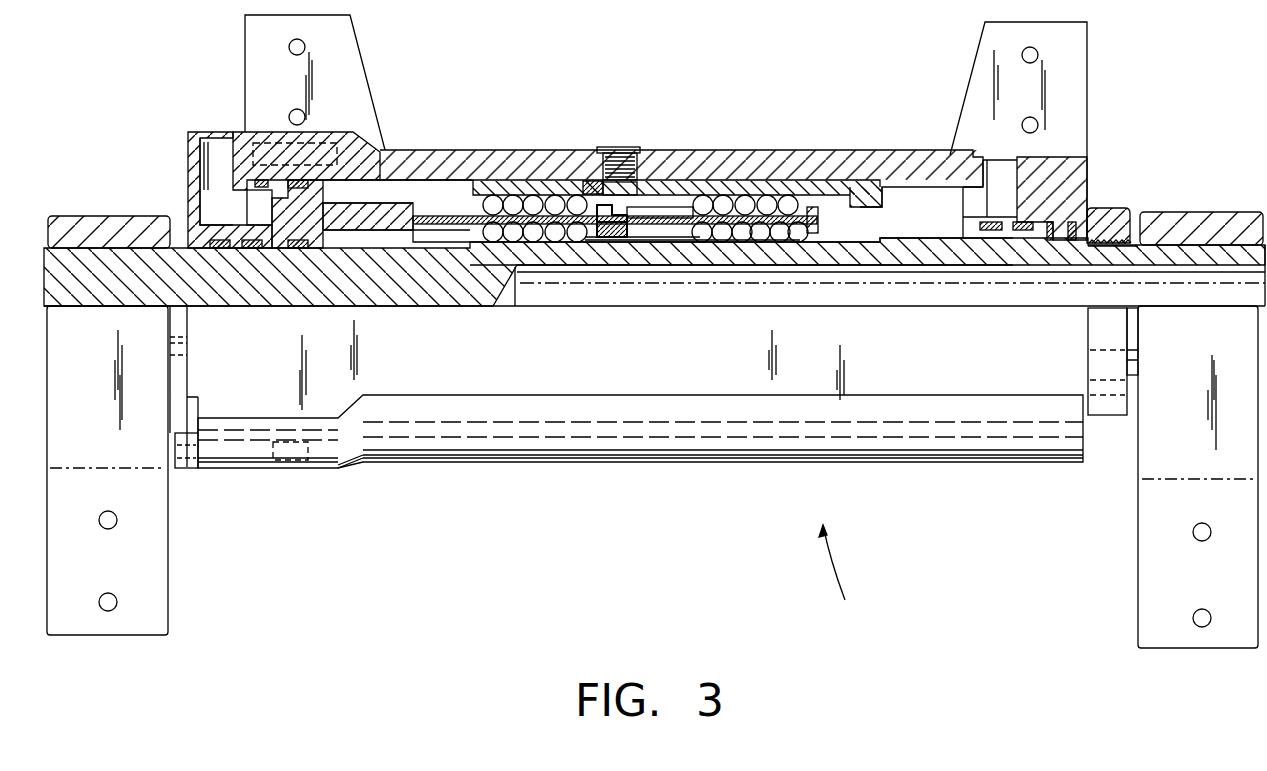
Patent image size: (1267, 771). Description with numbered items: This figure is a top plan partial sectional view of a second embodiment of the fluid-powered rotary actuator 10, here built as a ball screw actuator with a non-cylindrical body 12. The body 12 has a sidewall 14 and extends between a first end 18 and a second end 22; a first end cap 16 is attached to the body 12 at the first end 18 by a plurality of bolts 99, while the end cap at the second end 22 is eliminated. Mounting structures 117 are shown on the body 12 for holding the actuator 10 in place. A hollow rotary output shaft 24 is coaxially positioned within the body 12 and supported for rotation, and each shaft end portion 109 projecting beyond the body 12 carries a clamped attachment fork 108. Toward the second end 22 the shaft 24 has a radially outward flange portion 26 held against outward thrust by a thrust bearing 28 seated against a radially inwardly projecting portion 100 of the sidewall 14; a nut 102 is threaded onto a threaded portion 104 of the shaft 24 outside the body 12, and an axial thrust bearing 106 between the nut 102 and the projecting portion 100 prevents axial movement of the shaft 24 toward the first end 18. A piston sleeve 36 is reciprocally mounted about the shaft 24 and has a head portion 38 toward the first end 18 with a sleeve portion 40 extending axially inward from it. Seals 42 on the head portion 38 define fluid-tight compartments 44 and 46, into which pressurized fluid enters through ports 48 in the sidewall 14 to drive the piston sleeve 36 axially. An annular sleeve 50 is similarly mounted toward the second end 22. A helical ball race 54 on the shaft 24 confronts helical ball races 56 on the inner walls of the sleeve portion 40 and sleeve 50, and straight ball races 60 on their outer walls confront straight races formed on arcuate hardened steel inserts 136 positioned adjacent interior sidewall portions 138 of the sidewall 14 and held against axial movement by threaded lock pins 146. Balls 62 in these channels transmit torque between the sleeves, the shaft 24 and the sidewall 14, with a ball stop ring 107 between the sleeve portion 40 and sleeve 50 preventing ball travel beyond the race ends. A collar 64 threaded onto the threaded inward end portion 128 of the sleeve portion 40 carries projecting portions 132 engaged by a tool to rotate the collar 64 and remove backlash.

The fluid-powered rotary actuator 10 is at (843, 577).
The body 12 is at (748, 150).
The sidewall 14 is at (806, 165).
The first end cap 16 is at (192, 215).
The first end 18 is at (252, 145).
The second end 22 is at (1055, 175).
The rotary output shaft 24 is at (857, 306).
The flange portion 26 is at (990, 238).
The thrust bearing 28 is at (1025, 238).
The piston sleeve 36 is at (403, 168).
The head portion 38 is at (283, 195).
The sleeve portion 40 is at (467, 213).
The seals 42 is at (300, 180).
The fluid-tight compartment 44 is at (272, 210).
The fluid-tight compartment 46 is at (385, 190).
The ports 48 is at (208, 153).
The annular sleeve 50 is at (685, 218).
The helical ball race 54 is at (628, 243).
The helical ball races 56 is at (668, 240).
The straight ball races 60 is at (453, 217).
The balls 62 is at (533, 196).
The collar 64 is at (655, 215).
The bolts 99 is at (190, 460).
The radially inwardly projecting portion 100 is at (1052, 244).
The nut 102 is at (1115, 215).
The threaded portion 104 is at (1108, 250).
The axial thrust bearing 106 is at (1075, 243).
The ball stop ring 107 is at (598, 180).
The attachment fork 108 is at (150, 555).
The shaft end portion 109 is at (100, 270).
The mounting bracket 117 is at (347, 60).
The threaded axially inward end portion 128 is at (600, 238).
The projecting portions 132 is at (632, 203).
The inserts 136 is at (772, 190).
The interior sidewall portions 138 is at (850, 185).
The threaded lock pins 146 is at (620, 155).